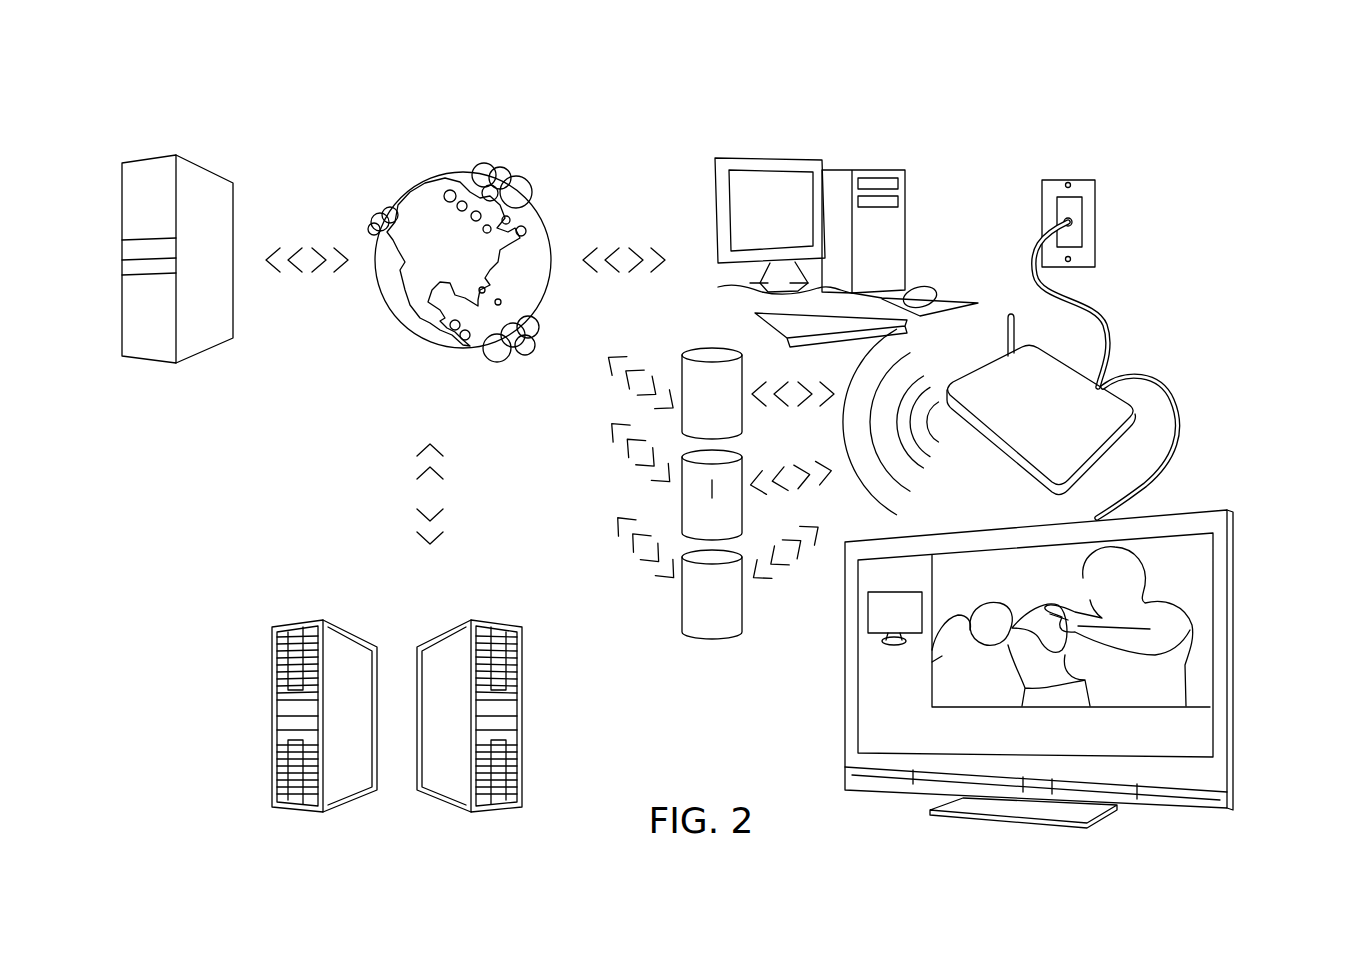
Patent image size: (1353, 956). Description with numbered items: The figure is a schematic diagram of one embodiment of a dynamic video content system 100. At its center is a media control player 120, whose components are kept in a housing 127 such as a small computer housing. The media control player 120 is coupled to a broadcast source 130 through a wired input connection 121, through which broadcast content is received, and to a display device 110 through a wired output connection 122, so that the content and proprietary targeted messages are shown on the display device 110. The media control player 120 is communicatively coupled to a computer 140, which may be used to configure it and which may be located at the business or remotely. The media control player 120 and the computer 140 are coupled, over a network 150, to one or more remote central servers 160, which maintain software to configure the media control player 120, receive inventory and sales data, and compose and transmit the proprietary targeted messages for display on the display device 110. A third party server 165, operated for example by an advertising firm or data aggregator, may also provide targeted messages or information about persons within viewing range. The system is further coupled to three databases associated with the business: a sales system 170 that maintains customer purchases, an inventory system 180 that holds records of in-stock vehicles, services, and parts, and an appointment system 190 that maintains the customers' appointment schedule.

The dynamic video content system 100 is at (158, 98).
The display device 110 is at (1252, 540).
The media control player 120 is at (1077, 360).
The input connection 121 is at (1093, 302).
The output connection 122 is at (1178, 420).
The housing 127 is at (985, 378).
The broadcast source 130 is at (1097, 222).
The computer 140 is at (921, 192).
The internet network 150 is at (378, 190).
The remote central servers 160 is at (264, 563).
The third party server 165 is at (148, 358).
The sales system 170 is at (683, 360).
The inventory system 180 is at (712, 495).
The appointment system 190 is at (712, 633).